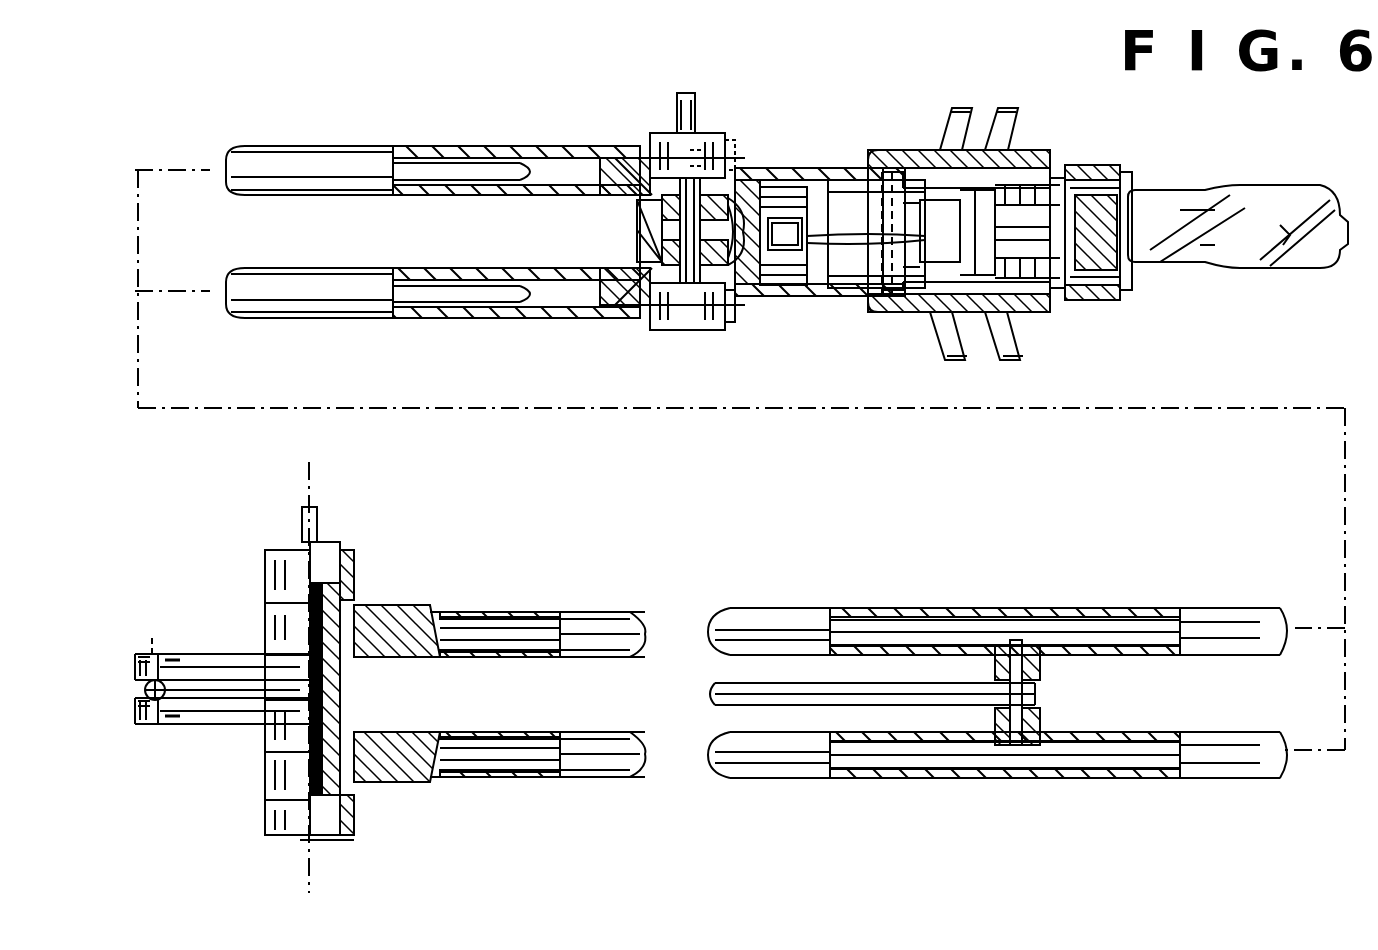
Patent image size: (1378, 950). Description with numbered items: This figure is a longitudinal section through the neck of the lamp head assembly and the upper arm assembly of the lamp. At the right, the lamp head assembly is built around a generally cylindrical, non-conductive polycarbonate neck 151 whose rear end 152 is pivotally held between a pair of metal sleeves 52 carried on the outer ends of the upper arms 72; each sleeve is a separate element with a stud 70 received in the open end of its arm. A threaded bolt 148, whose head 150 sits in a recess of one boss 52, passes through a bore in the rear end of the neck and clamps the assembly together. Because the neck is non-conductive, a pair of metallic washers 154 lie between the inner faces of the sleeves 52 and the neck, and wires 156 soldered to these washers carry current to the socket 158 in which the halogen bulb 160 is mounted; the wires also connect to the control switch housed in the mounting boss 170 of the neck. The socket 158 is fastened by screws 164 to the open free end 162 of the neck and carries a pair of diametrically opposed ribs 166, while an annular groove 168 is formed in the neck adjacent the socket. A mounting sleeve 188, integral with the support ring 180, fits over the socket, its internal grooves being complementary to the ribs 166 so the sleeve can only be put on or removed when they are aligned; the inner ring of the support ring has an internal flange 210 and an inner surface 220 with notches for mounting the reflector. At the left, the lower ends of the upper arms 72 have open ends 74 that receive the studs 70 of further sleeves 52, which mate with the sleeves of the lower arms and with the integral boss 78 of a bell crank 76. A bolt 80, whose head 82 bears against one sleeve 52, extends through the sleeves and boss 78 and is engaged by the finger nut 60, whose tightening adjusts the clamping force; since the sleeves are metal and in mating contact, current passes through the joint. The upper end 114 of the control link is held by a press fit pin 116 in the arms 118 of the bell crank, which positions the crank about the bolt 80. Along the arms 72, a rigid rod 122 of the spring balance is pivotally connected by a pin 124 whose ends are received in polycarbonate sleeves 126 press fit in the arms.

The sleeves 52 is at (645, 318).
The finger nut 60 is at (317, 520).
The studs 70 is at (450, 625).
The upper arms 72 is at (600, 608).
The arm ends 74 is at (435, 600).
The bell crank 76 is at (135, 690).
The boss 78 is at (255, 665).
The bolt 80 is at (340, 690).
The head 82 is at (325, 842).
The upper end 114 is at (225, 740).
The press fit pin 116 is at (148, 628).
The arms 118 is at (185, 660).
The rod 122 is at (1038, 692).
The pin 124 is at (1030, 665).
The polycarbonate sleeves 126 is at (1018, 640).
The threaded bolt 148 is at (637, 232).
The head 150 is at (695, 320).
The neck 151 is at (810, 168).
The rear end 152 is at (697, 115).
The metallic washers 154 is at (662, 258).
The wires 156 is at (748, 180).
The socket 158 is at (1090, 265).
The halogen bulb 160 is at (1225, 268).
The open free end 162 is at (1060, 300).
The screws 164 is at (1095, 188).
The ribs 166 is at (1085, 165).
The annular groove 168 is at (935, 320).
The mounting boss 170 is at (528, 290).
The support ring 180 is at (950, 120).
The mounting sleeve 188 is at (892, 318).
The internal flange 210 is at (1035, 358).
The inner surface 220 is at (1005, 130).